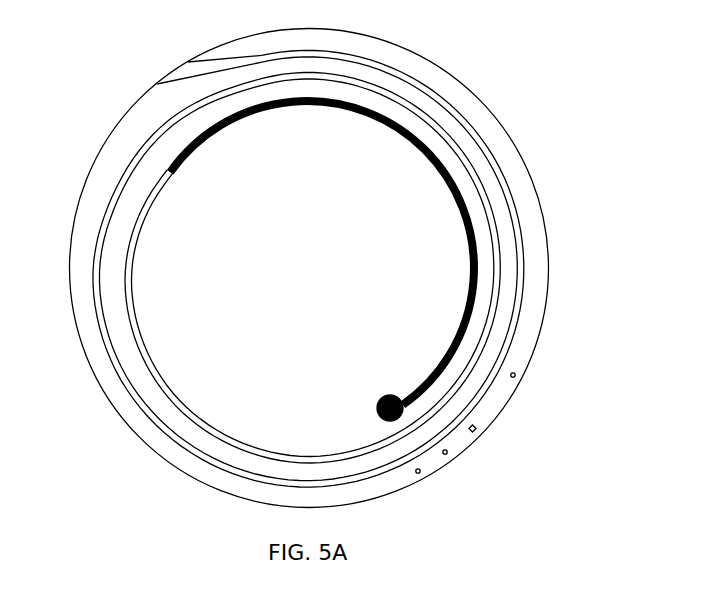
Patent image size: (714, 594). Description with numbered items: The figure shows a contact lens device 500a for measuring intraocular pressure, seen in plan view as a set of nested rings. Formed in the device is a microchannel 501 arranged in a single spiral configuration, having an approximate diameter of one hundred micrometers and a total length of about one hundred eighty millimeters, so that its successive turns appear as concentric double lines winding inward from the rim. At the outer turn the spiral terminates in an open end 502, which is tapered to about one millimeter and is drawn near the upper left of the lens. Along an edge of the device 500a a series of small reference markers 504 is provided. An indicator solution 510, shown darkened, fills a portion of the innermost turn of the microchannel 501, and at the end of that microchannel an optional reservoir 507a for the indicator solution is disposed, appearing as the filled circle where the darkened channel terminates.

The contact lens device 500a is at (113, 413).
The microchannel 501 is at (520, 313).
The open end 502 is at (195, 68).
The reference markers 504 is at (515, 378).
The reservoir 507a is at (398, 414).
The indicator solution 510 is at (473, 235).